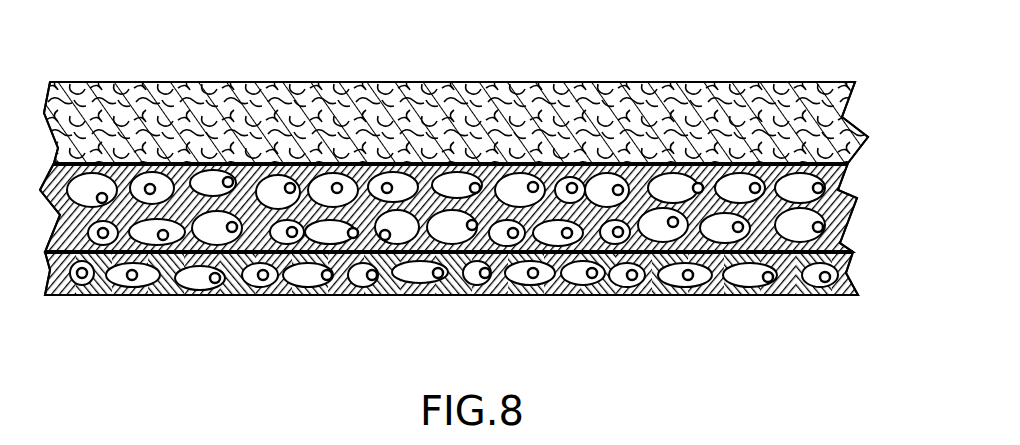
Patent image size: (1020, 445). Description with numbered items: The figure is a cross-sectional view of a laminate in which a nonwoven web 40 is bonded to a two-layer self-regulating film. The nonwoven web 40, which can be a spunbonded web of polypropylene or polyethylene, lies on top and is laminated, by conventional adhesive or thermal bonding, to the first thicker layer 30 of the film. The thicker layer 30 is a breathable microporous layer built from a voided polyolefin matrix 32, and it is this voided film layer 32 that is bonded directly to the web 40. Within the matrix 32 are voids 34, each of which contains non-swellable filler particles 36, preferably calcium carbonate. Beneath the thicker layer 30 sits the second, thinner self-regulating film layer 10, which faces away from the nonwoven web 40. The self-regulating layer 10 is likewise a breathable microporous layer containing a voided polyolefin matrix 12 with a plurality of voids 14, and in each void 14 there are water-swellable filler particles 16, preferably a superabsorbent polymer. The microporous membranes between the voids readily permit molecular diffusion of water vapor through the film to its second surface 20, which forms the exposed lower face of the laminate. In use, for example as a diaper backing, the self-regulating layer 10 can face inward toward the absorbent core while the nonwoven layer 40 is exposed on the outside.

The self-regulating film layer 10 is at (858, 293).
The polymer matrix 12 is at (712, 286).
The voids 14 is at (512, 282).
The water-swellable filler particles 16 is at (534, 279).
The second surface 20 is at (237, 296).
The first thicker layer 30 is at (847, 212).
The voided polyolefin matrix 32 is at (845, 168).
The voids 34 is at (604, 182).
The non-swellable filler particles 36 is at (617, 186).
The nonwoven web 40 is at (822, 108).